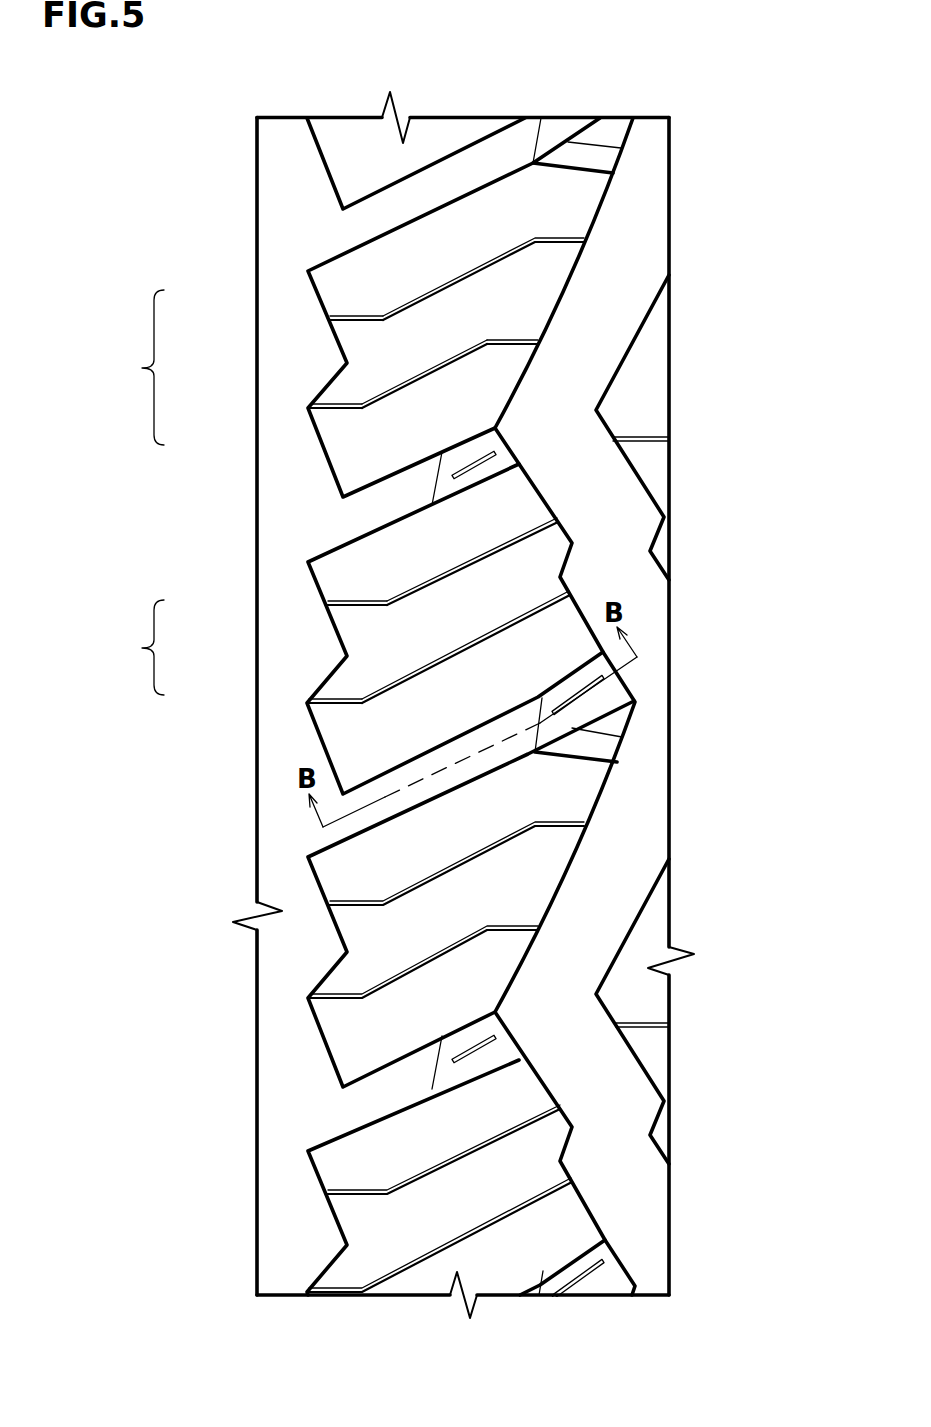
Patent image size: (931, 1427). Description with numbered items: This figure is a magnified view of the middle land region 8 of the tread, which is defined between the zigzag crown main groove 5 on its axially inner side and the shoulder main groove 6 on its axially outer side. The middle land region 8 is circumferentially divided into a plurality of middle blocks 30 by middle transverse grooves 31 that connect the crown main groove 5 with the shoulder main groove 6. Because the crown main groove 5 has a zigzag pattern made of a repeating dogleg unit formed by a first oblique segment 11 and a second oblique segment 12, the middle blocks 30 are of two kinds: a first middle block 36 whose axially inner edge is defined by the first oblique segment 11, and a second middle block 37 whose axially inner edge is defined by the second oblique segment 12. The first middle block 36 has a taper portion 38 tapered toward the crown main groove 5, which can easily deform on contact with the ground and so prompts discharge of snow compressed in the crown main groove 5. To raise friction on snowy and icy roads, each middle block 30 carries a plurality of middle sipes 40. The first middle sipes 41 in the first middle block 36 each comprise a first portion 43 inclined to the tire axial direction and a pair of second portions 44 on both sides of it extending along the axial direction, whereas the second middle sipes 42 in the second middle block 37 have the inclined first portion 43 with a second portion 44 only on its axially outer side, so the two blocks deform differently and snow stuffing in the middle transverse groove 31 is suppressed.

The crown main groove 5 is at (648, 190).
The shoulder main groove 6 is at (294, 164).
The middle land region 8 is at (463, 227).
The first oblique segment 11 is at (610, 322).
The second oblique segment 12 is at (625, 546).
The middle blocks 30 is at (497, 303).
The middle transverse grooves 31 is at (384, 203).
The first middle block 36 is at (519, 889).
The second middle block 37 is at (512, 1173).
The taper portion 38 is at (575, 200).
The middle sipes 40 is at (448, 308).
The first middle sipes 41 is at (335, 496).
The second middle sipes 42 is at (342, 462).
The first portion 43 is at (404, 375).
The second portion 44 is at (310, 313).